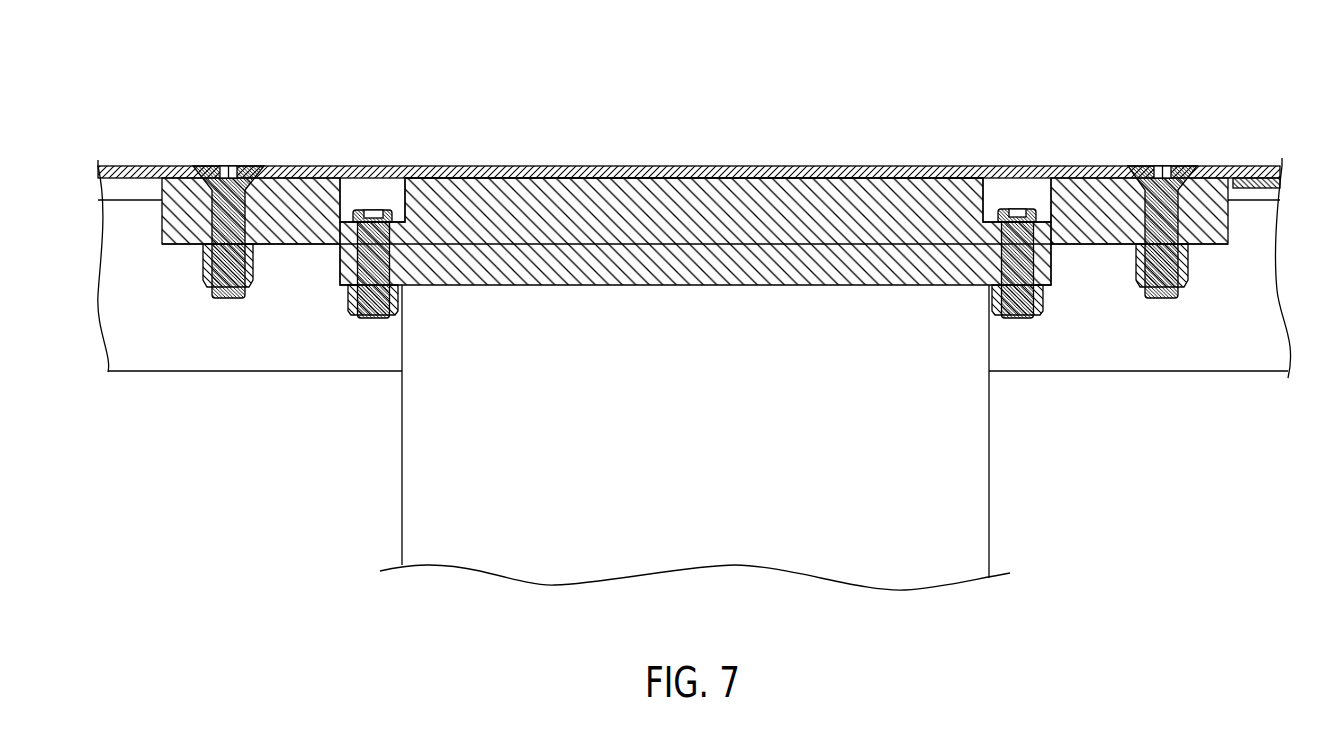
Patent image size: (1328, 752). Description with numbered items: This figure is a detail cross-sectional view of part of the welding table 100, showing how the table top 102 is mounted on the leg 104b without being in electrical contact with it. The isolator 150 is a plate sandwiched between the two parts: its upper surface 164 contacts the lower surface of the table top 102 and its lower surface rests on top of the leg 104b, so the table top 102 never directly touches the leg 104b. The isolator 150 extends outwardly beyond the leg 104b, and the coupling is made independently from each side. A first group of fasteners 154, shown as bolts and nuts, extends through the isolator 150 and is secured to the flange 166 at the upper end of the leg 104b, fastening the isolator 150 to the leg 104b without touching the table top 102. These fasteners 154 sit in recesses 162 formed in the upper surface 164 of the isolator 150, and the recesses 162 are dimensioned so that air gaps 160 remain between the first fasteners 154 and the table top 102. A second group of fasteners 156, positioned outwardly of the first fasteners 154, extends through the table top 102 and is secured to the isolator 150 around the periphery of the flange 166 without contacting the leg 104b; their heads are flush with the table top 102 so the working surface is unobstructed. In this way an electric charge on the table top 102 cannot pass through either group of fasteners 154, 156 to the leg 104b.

The welding table 100 is at (694, 322).
The table top 102 is at (665, 166).
The leg 104b is at (970, 459).
The isolator 150 is at (800, 213).
The first group of fasteners 154 is at (374, 292).
The second group of fasteners 156 is at (235, 282).
The air gap 160 is at (394, 190).
The recess 162 is at (341, 196).
The upper surface 164 is at (713, 178).
The flange 166 is at (347, 272).